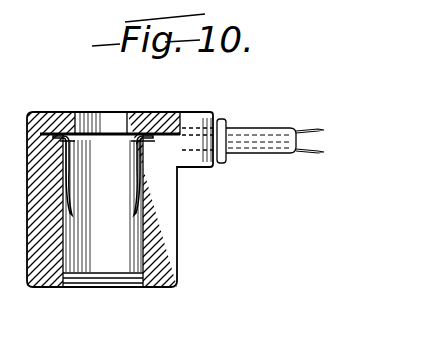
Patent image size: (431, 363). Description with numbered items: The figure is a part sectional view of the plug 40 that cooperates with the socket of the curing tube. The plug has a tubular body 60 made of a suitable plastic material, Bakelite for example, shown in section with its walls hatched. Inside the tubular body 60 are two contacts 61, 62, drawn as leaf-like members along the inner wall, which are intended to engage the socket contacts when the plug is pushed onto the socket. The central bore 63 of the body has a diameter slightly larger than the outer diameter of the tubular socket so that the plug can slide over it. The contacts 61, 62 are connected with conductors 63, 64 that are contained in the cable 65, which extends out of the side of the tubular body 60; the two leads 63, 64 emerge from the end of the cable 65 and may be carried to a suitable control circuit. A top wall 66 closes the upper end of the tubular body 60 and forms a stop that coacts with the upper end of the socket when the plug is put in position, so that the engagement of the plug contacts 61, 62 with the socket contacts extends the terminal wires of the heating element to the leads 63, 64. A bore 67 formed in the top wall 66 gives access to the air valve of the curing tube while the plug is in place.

The connector body 40 is at (8, 321).
The tubular body 60 is at (172, 251).
The contact 61 is at (70, 207).
The contact 62 is at (131, 183).
The conductor 63 is at (303, 130).
The conductor 64 is at (303, 153).
The cable 65 is at (272, 150).
The top wall 66 is at (62, 110).
The bore 67 is at (105, 110).